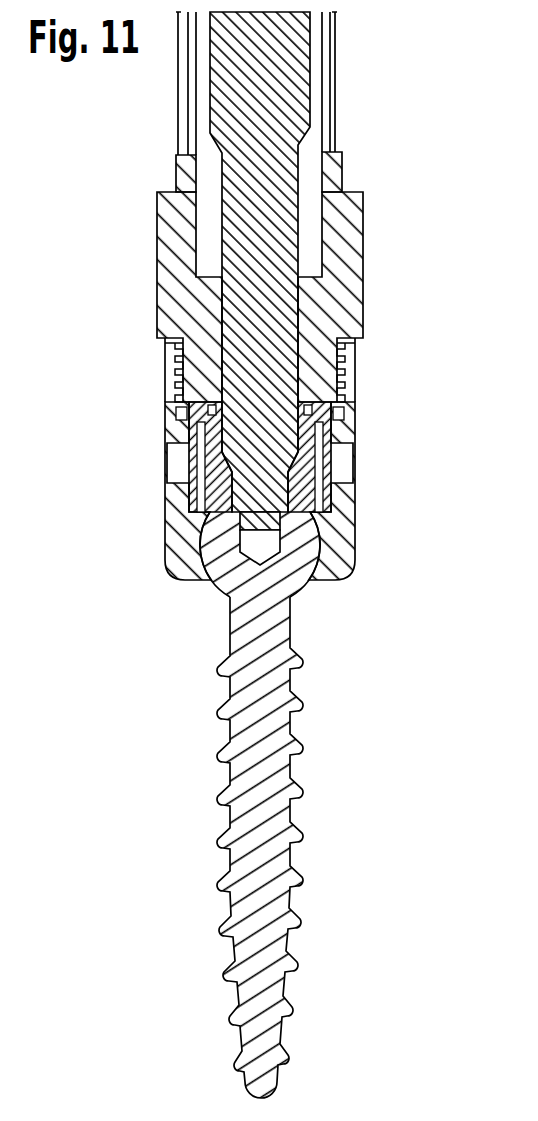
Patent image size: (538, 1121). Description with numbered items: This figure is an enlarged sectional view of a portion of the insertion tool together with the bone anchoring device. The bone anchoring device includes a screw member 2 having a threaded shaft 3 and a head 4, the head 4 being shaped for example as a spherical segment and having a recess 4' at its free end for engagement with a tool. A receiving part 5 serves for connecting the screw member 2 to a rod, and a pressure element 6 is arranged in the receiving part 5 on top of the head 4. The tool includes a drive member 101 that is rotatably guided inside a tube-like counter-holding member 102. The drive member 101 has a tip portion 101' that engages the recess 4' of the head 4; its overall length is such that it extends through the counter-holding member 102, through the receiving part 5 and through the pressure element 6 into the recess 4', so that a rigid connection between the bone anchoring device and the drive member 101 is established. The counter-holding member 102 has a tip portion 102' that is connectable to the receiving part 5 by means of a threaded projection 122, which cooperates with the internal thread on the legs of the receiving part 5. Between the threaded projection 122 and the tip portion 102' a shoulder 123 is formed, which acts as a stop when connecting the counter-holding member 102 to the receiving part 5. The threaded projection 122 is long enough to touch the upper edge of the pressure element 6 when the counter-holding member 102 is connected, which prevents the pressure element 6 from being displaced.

The screw member 2 is at (318, 720).
The threaded shaft 3 is at (277, 822).
The head 4 is at (281, 578).
The recess 4' is at (317, 553).
The receiving part 5 is at (347, 428).
The pressure element 6 is at (330, 473).
The drive member 101 is at (301, 262).
The tip portion 101' is at (190, 526).
The counter-holding member 102 is at (300, 102).
The tip portion 102' is at (307, 297).
The threaded projection 122 is at (327, 375).
The shoulder 123 is at (162, 343).